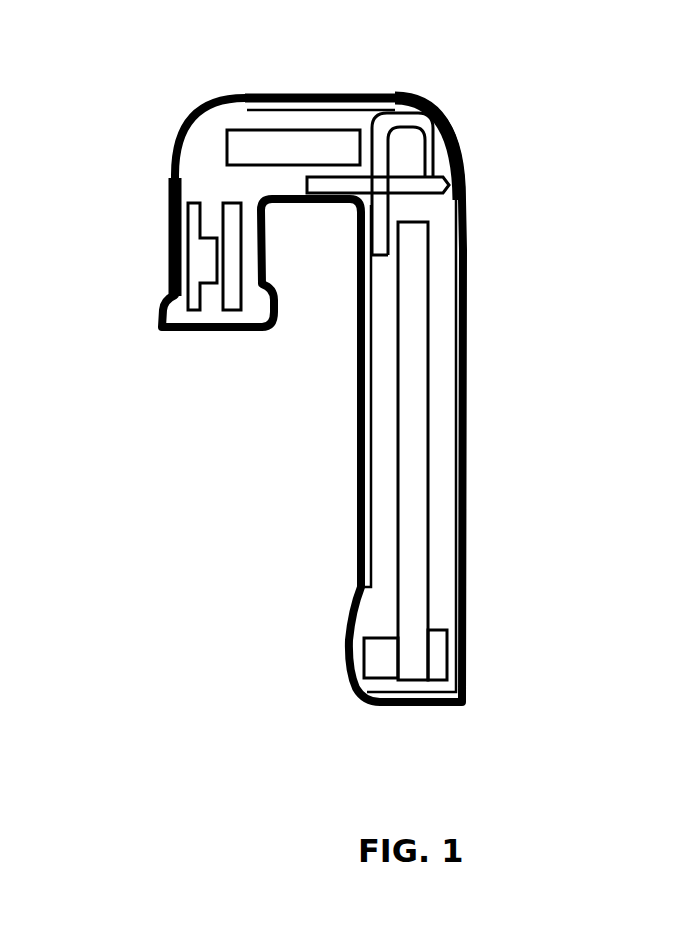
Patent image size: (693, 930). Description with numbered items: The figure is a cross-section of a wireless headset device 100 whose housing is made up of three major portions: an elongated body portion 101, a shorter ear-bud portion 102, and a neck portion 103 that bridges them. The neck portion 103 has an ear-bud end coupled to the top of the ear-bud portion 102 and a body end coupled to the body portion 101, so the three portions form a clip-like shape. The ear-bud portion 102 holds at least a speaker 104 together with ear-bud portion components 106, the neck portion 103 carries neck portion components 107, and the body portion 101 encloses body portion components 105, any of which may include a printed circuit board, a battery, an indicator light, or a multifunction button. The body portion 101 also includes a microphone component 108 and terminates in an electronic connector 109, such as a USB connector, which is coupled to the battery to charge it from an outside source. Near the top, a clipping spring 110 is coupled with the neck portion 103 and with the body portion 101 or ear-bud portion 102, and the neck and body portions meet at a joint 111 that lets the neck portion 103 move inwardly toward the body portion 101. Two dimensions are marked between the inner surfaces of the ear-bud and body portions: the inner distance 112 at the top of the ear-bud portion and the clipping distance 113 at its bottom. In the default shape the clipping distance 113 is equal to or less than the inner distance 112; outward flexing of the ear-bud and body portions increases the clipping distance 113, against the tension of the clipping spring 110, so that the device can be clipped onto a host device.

The wireless headset device 100 is at (568, 412).
The body portion 101 is at (478, 362).
The ear-bud portion 102 is at (160, 237).
The neck portion 103 is at (307, 86).
The speaker 104 is at (197, 240).
The body portion components 105 is at (412, 441).
The ear-bud portion components 106 is at (232, 222).
The neck portion components 107 is at (297, 145).
The microphone component 108 is at (383, 663).
The electronic connector 109 is at (438, 655).
The clipping spring 110 is at (404, 158).
The joint 111 is at (456, 113).
The inner distance 112 is at (354, 212).
The clipping distance 113 is at (354, 310).